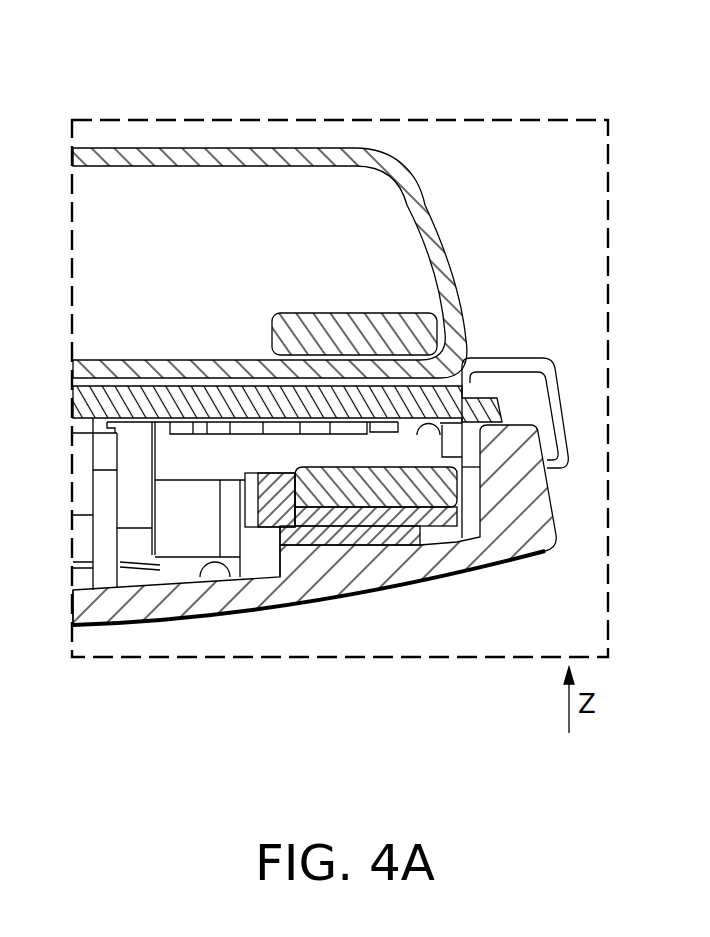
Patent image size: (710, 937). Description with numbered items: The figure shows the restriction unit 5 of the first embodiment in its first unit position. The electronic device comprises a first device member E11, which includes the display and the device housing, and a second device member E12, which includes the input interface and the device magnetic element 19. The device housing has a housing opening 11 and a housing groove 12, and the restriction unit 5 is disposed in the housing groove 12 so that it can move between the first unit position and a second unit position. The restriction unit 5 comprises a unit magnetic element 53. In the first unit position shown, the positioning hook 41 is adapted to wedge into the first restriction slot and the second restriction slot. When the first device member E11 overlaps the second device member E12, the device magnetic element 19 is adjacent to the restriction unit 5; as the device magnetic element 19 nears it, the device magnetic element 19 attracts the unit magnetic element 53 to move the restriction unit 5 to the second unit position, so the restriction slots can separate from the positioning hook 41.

The second device member E12 is at (188, 133).
The device magnetic element 19 is at (405, 315).
The housing groove 12 is at (470, 493).
The housing opening 11 is at (138, 603).
The first device member E11 is at (88, 644).
The positioning hook 41 is at (245, 495).
The restriction unit 5 is at (270, 542).
The unit magnetic element 53 is at (387, 490).